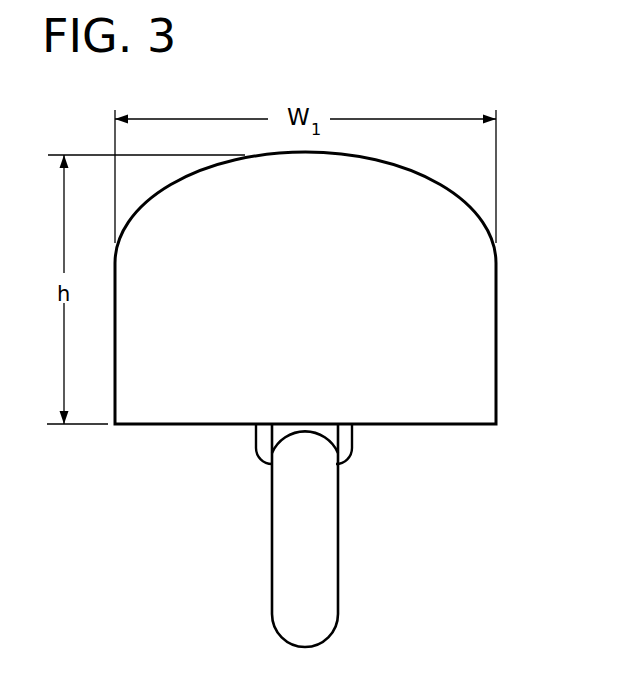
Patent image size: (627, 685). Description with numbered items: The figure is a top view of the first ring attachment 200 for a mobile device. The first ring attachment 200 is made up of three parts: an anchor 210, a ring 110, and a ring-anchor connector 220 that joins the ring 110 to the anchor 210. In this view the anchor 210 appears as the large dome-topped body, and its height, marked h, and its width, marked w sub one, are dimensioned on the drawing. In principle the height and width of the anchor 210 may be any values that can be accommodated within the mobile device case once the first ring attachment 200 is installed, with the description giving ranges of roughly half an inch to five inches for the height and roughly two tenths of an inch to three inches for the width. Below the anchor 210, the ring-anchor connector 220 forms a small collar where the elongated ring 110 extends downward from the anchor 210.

The first ring attachment 200 is at (513, 235).
The anchor 210 is at (340, 322).
The ring-anchor connector 220 is at (345, 437).
The ring 110 is at (338, 582).